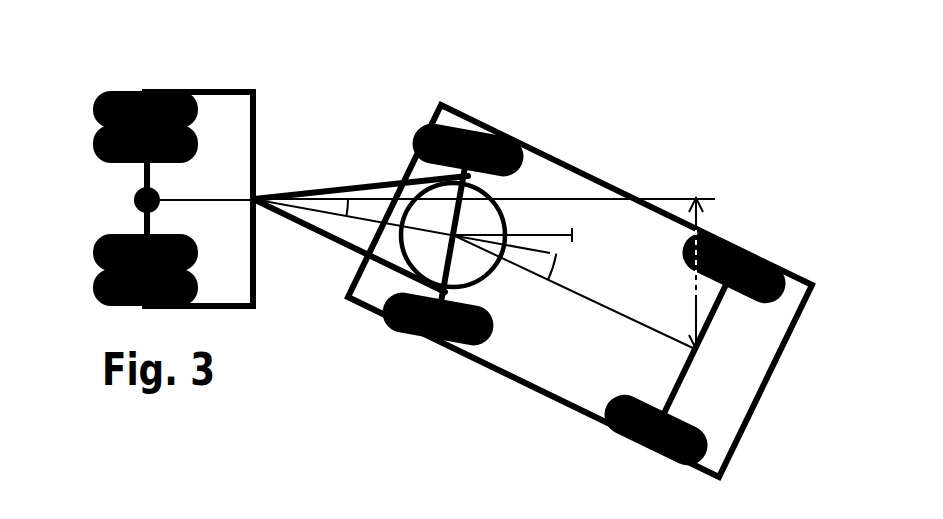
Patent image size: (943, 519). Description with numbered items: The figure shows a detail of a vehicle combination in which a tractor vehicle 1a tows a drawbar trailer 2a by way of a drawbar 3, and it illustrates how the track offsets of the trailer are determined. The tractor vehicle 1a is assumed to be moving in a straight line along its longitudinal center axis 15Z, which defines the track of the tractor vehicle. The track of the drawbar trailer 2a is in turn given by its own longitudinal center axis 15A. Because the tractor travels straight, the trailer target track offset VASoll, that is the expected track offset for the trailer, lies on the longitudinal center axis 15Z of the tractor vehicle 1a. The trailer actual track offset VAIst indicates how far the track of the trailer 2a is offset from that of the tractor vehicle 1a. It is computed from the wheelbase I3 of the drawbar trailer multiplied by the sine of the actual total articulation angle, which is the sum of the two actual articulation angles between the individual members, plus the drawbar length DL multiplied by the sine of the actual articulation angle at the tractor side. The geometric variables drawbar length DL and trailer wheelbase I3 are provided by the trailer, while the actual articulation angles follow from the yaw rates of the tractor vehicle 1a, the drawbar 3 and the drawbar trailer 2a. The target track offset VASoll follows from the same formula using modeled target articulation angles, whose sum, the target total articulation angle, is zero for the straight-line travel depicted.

The tractor vehicle 1a is at (218, 91).
The longitudinal center axis of the tractor vehicle 15Z is at (215, 198).
The drawbar 3 is at (360, 248).
The drawbar length DL is at (350, 243).
The drawbar trailer 2a is at (594, 291).
The longitudinal center axis of the trailer 15A is at (574, 284).
The wheelbase of the drawbar trailer I3 is at (604, 307).
The trailer actual track offset VAIst is at (694, 295).
The trailer target track offset VASoll is at (708, 197).